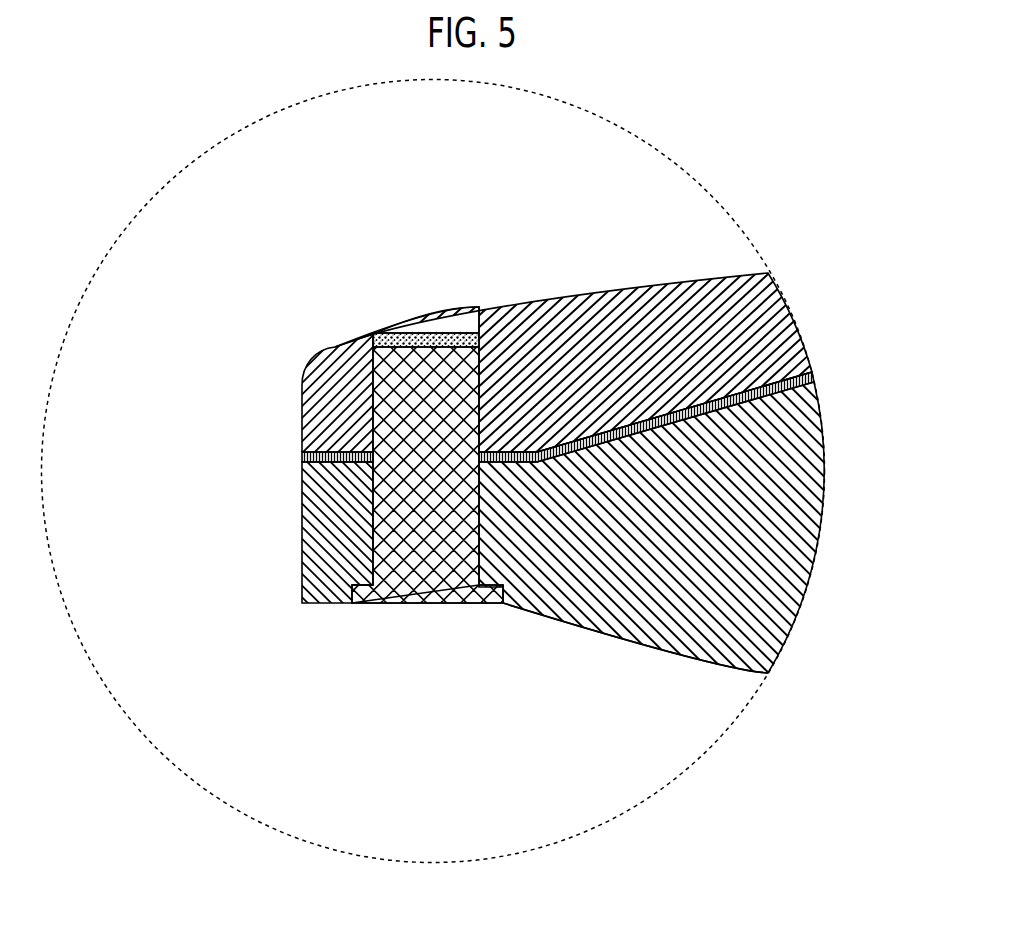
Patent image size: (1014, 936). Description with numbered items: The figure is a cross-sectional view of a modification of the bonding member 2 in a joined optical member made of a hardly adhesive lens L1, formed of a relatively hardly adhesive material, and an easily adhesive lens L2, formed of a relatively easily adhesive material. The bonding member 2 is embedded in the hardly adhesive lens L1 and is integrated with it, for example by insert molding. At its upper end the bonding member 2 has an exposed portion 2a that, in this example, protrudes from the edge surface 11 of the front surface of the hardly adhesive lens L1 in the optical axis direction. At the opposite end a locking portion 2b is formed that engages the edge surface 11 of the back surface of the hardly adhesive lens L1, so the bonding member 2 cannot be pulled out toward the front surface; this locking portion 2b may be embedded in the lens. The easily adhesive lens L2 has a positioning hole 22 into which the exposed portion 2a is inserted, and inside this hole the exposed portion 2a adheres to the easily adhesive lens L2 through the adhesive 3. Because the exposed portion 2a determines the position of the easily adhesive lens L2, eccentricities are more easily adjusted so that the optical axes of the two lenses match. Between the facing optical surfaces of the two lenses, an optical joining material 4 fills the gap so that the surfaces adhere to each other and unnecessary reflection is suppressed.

The bonding member 2 is at (400, 495).
The exposed portion 2a is at (385, 375).
The locking portion 2b is at (363, 603).
The adhesive 3 is at (417, 345).
The optical joining material 4 is at (812, 378).
The edge surface 11 is at (517, 693).
The positioning hole 22 is at (462, 318).
The hardly adhesive lens L1 is at (837, 518).
The easily adhesive lens L2 is at (803, 320).